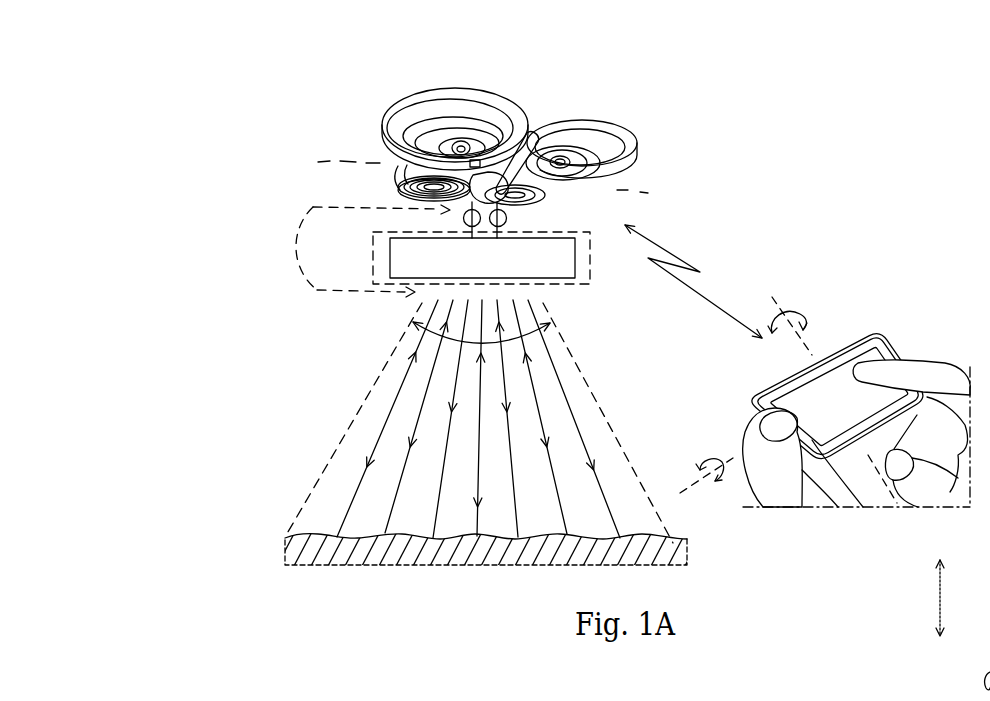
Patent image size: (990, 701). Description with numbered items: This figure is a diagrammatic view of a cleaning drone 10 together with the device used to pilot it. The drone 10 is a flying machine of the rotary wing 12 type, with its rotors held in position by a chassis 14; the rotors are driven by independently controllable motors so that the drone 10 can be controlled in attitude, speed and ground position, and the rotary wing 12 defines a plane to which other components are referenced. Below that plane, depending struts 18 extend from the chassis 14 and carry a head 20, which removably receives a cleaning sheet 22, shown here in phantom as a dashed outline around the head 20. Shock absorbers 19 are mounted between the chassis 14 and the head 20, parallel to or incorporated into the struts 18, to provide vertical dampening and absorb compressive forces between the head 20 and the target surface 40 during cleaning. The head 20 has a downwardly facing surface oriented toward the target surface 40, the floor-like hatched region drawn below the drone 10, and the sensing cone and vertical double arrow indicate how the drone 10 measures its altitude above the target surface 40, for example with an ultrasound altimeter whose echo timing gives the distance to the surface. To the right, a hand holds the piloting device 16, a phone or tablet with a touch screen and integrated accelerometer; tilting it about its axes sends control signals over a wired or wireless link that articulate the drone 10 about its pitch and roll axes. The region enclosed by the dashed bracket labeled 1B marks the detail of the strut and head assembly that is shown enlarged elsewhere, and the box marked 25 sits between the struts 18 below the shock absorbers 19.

The drone 10 is at (677, 104).
The rotary wing 12 is at (397, 146).
The chassis 14 is at (490, 103).
The piloting device 16 is at (879, 325).
The strut 18 is at (500, 204).
The shock absorber 19 is at (507, 220).
The head 20 is at (989, 623).
The cleaning sheet 22 is at (590, 287).
The sensor payload 25 is at (491, 270).
The target surface 40 is at (315, 532).
The detail region of FIG. 1B is at (290, 252).